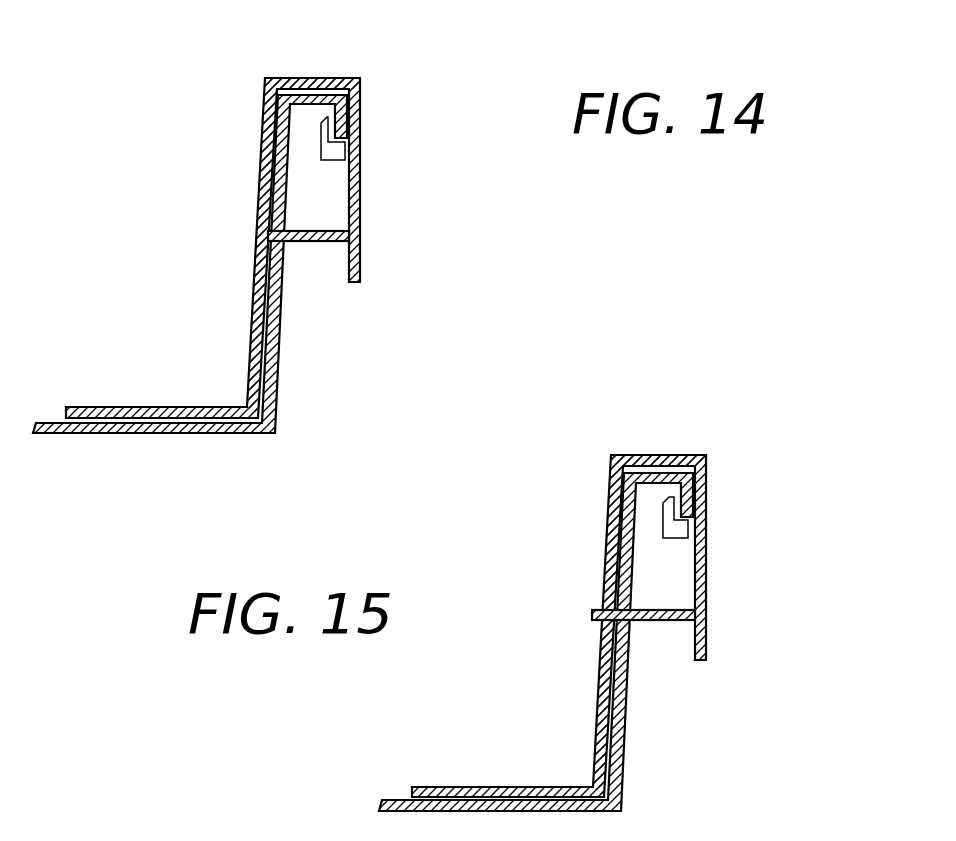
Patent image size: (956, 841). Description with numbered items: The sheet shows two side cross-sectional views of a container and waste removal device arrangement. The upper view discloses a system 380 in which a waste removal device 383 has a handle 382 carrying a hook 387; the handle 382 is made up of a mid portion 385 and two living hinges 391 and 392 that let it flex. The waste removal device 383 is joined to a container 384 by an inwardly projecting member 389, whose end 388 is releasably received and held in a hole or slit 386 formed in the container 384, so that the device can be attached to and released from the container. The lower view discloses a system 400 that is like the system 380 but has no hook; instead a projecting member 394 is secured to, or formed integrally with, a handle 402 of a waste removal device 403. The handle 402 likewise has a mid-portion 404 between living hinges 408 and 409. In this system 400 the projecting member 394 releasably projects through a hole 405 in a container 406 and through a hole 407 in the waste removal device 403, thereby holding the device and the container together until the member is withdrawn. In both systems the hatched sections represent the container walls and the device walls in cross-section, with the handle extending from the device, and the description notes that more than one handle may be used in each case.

In FIG. 14, the system 380 is at (220, 299).
In FIG. 14, the handle 382 is at (362, 210).
In FIG. 14, the waste removal device 383 is at (172, 407).
In FIG. 14, the container 384 is at (278, 402).
In FIG. 14, the mid portion 385 is at (330, 78).
In FIG. 14, the hole or slit 386 is at (280, 224).
In FIG. 14, the hook 387 is at (345, 150).
In FIG. 14, the end 388 is at (255, 232).
In FIG. 14, the inwardly projecting member 389 is at (327, 242).
In FIG. 14, the living hinge 391 is at (263, 78).
In FIG. 14, the living hinge 392 is at (363, 82).
In FIG. 15, the system 400 is at (569, 701).
In FIG. 15, the handle 402 is at (707, 560).
In FIG. 15, the waste removal device 403 is at (462, 787).
In FIG. 15, the mid-portion 404 is at (668, 455).
In FIG. 15, the hole 405 is at (624, 604).
In FIG. 15, the container 406 is at (619, 772).
In FIG. 15, the hole 407 is at (603, 608).
In FIG. 15, the living hinge 408 is at (703, 457).
In FIG. 15, the living hinge 409 is at (617, 455).
In FIG. 15, the projecting member 394 is at (667, 621).